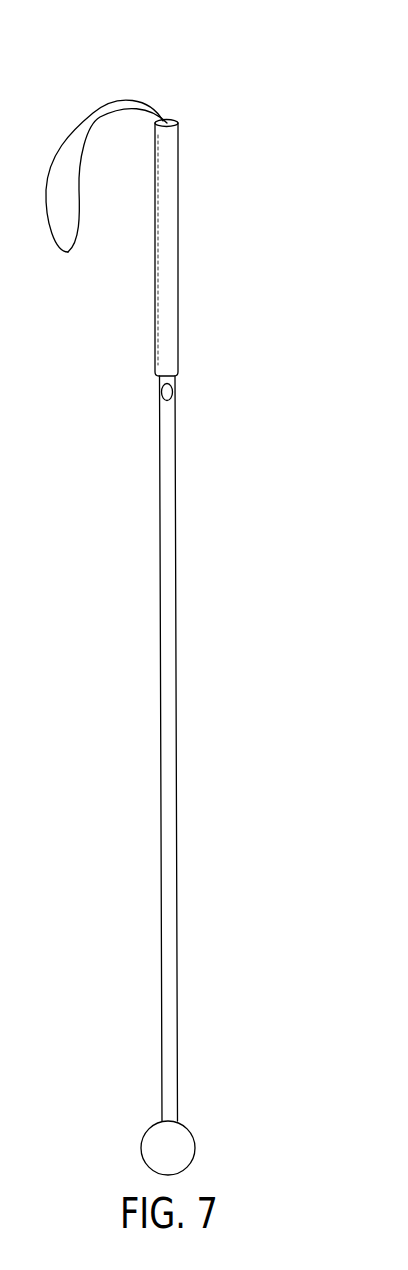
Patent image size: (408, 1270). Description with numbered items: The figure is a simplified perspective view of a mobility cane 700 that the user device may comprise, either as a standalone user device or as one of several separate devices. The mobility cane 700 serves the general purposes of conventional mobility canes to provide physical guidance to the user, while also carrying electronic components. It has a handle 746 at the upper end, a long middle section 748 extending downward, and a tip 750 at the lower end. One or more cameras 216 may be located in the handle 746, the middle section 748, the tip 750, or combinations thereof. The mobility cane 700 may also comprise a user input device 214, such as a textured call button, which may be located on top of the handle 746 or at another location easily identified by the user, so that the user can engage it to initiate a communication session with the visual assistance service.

The mobility cane 700 is at (249, 141).
The handle 746 is at (155, 256).
The user input device 214 is at (170, 120).
The camera 216 is at (172, 392).
The middle section 748 is at (173, 752).
The tip 750 is at (192, 1148).